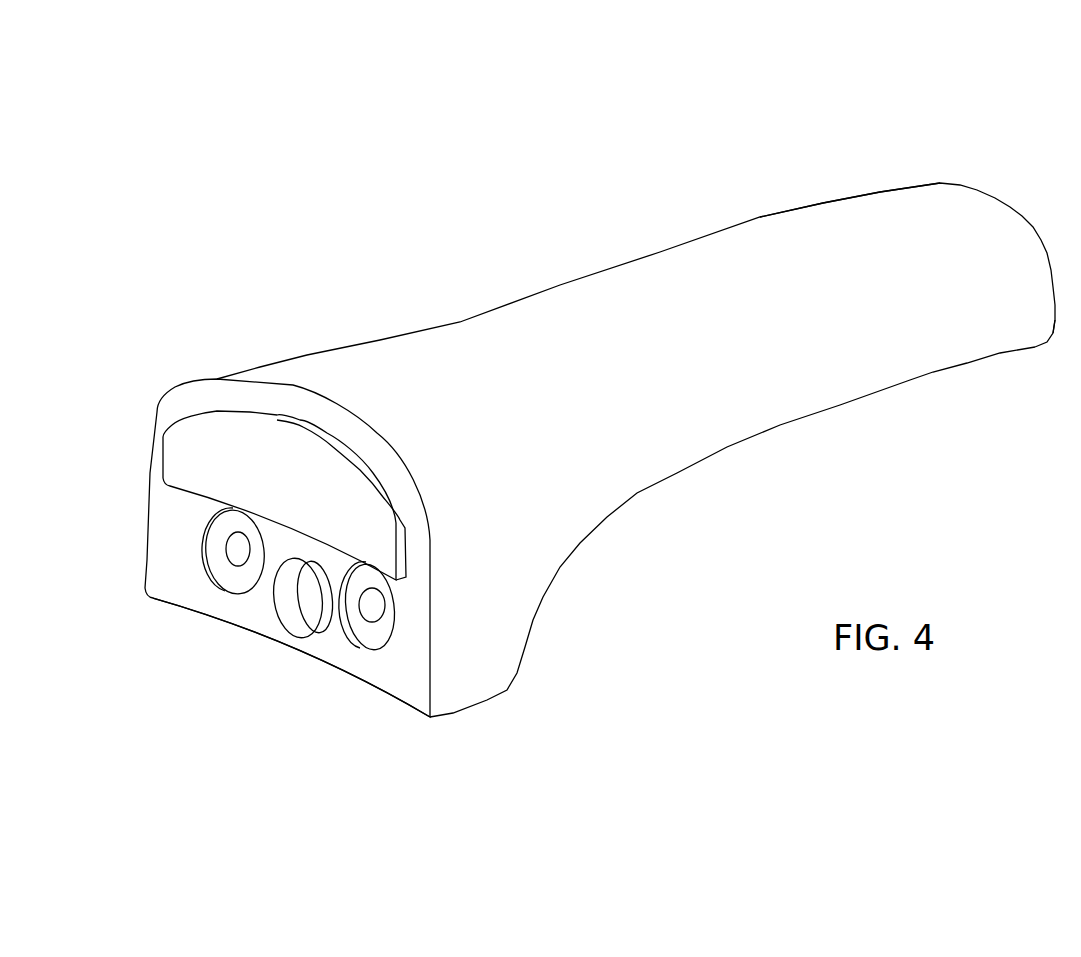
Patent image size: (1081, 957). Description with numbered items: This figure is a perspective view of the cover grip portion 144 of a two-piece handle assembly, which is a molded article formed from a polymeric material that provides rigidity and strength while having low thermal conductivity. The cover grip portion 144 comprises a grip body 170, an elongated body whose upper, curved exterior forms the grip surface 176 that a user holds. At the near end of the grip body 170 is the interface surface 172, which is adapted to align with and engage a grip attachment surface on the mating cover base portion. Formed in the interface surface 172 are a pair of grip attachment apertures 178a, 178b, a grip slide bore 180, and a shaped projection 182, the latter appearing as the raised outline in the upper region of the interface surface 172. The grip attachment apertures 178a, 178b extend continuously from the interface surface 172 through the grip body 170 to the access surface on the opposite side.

The cover grip portion 144 is at (668, 161).
The grip body 170 is at (460, 345).
The interface surface 172 is at (240, 617).
The grip surface 176 is at (824, 214).
The grip attachment aperture 178a is at (372, 618).
The grip attachment aperture 178b is at (233, 552).
The grip slide bore 180 is at (320, 602).
The shaped projection 182 is at (273, 413).